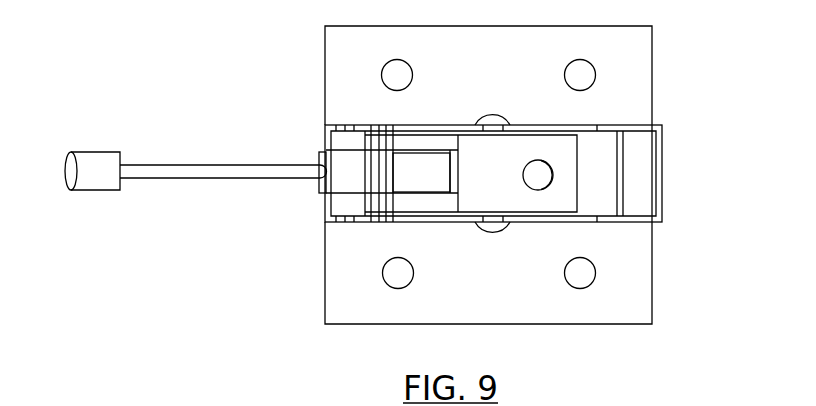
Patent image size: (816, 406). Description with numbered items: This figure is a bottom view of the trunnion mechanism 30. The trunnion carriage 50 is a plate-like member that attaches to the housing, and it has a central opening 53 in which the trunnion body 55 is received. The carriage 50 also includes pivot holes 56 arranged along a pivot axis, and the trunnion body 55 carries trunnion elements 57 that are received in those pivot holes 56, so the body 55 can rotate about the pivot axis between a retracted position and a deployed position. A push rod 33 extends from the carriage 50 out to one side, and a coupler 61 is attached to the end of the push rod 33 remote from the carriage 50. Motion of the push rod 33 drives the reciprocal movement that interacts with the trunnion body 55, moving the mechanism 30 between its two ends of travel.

The trunnion mechanism 30 is at (296, 92).
The push rod 33 is at (237, 165).
The trunnion carriage 50 is at (650, 88).
The central opening 53 is at (603, 184).
The trunnion body 55 is at (518, 152).
The pivot holes 56 is at (484, 133).
The trunnion elements 57 is at (486, 120).
The coupler 61 is at (90, 153).